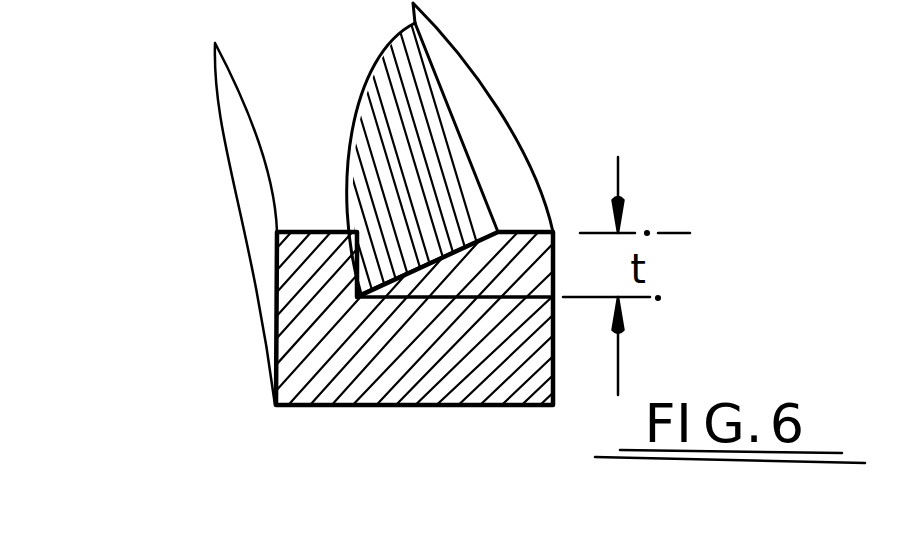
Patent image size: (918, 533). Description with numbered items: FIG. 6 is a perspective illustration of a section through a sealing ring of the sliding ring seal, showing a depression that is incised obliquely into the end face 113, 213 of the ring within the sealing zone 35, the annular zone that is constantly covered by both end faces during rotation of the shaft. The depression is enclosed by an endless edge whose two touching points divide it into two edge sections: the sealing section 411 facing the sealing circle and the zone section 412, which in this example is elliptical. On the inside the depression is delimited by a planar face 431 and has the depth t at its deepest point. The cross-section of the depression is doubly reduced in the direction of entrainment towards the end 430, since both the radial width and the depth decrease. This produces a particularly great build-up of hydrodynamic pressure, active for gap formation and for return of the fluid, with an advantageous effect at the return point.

The end face 113 is at (186, 202).
The end face 213 is at (246, 224).
The sealing zone 35 is at (297, 70).
The end 430 is at (386, 150).
The planar face 431 is at (419, 138).
The sealing section 411 is at (474, 178).
The zone section 412 is at (358, 112).